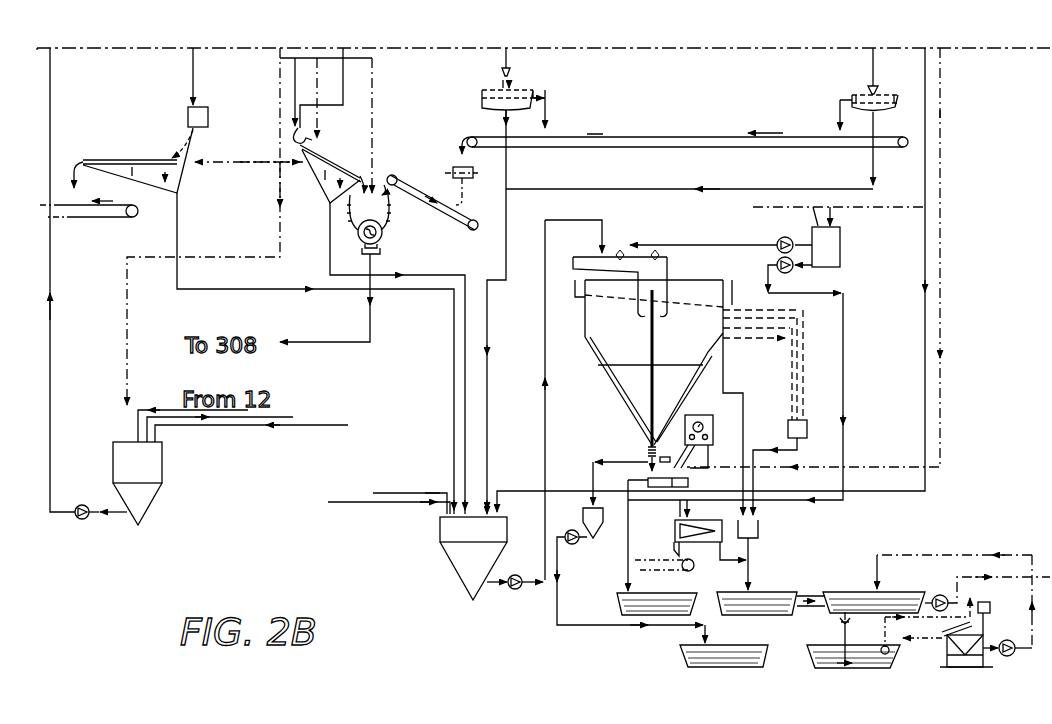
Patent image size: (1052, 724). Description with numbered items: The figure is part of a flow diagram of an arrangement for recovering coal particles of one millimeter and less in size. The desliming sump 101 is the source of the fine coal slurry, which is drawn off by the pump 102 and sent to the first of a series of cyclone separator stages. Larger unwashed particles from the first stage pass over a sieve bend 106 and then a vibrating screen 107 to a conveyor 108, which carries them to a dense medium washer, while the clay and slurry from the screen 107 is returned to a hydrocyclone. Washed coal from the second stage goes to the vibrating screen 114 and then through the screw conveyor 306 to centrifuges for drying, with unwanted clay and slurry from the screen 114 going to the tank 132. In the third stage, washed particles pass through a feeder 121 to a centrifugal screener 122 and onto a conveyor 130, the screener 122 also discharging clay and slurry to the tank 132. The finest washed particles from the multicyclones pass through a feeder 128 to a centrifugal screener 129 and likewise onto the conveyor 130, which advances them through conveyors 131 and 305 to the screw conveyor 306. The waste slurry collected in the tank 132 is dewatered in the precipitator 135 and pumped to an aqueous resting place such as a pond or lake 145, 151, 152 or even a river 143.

The desliming sump 101 is at (140, 468).
The pump 102 is at (81, 521).
The sieve bend 106 is at (208, 115).
The vibrating screen 107 is at (140, 160).
The conveyor 108 is at (100, 217).
The vibrating screen 114 is at (335, 158).
The feeder 121 is at (502, 76).
The centrifugal screener 122 is at (490, 104).
The feeder 128 is at (868, 90).
The centrifugal screener 129 is at (898, 100).
The conveyor 130 is at (680, 135).
The conveyor 131 is at (472, 167).
The tank 132 is at (470, 560).
The precipitator 135 is at (602, 338).
The river 143 is at (823, 652).
The aqueous resting place 145 is at (873, 656).
The aqueous resting place 151 is at (670, 595).
The aqueous resting place 152 is at (728, 650).
The conveyor 305 is at (417, 184).
The screw conveyor 306 is at (380, 250).